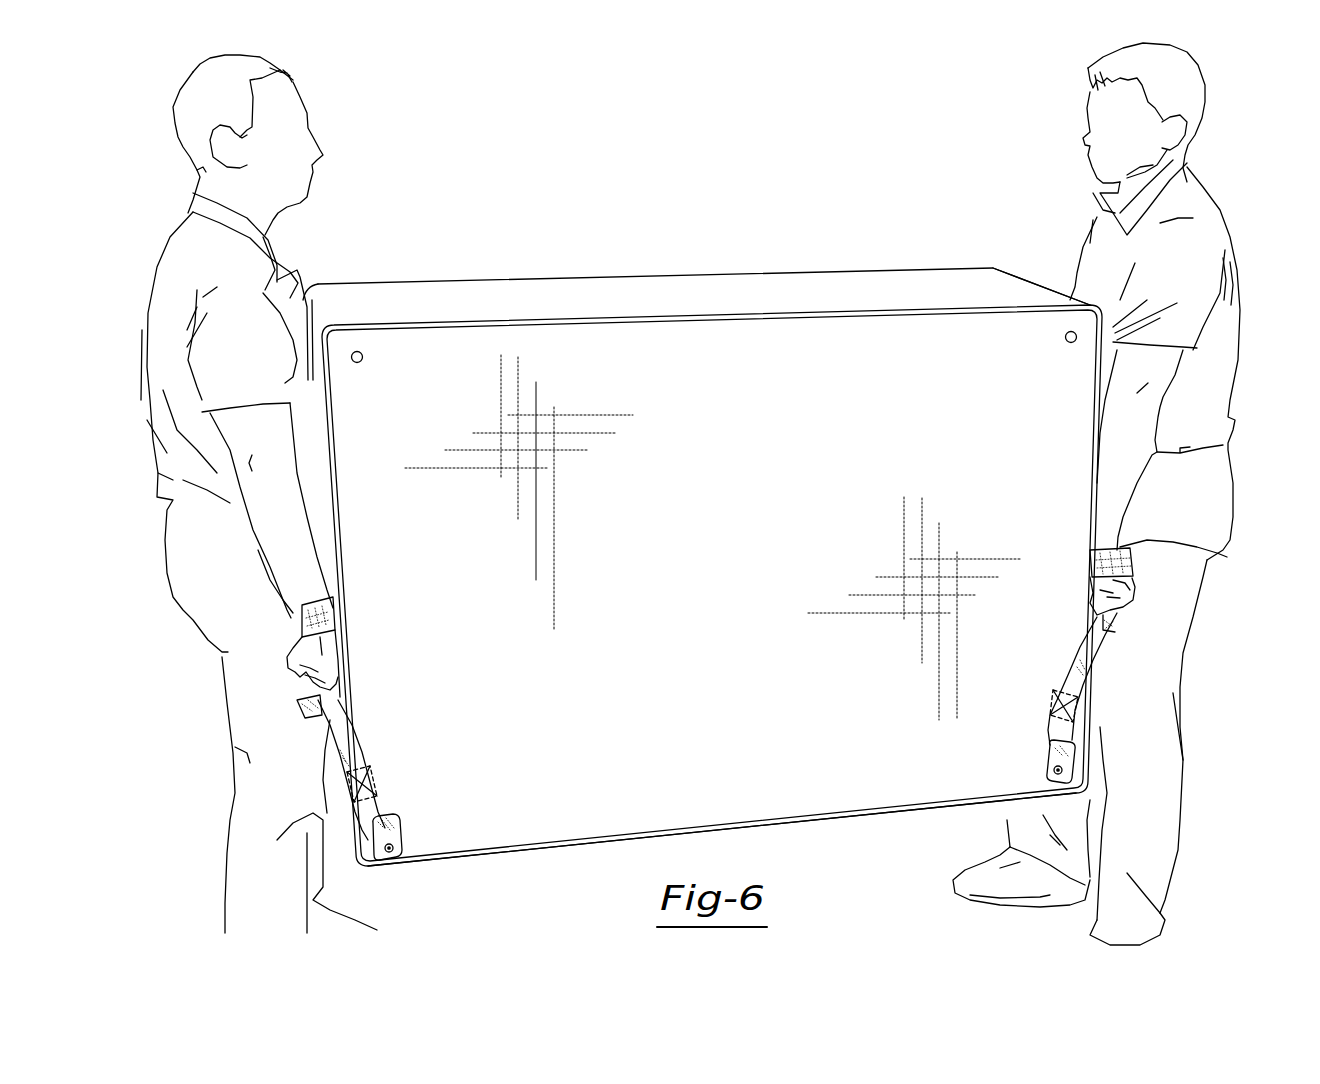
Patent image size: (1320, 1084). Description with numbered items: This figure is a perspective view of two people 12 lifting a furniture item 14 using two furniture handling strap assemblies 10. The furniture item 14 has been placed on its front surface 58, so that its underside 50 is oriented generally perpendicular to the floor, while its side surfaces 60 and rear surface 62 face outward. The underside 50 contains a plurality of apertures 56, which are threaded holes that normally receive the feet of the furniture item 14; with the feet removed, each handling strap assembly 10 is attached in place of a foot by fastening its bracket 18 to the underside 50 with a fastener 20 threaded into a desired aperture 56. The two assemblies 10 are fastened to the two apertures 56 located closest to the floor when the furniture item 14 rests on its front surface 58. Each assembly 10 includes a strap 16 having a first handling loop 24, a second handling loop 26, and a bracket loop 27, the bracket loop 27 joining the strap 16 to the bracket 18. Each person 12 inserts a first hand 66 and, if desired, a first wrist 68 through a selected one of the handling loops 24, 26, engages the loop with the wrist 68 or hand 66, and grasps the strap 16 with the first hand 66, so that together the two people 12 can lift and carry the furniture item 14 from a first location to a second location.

The furniture handling strap assembly 10 is at (316, 710).
The person 12 is at (287, 290).
The furniture item 14 is at (662, 285).
The strap 16 is at (358, 735).
The bracket 18 is at (397, 833).
The fastener 20 is at (394, 849).
The first handling loop 24 is at (330, 717).
The second handling loop 26 is at (335, 610).
The bracket loop 27 is at (375, 805).
The underside 50 is at (742, 563).
The aperture 56 is at (360, 363).
The front surface 58 is at (795, 826).
The side surface 60 is at (1040, 278).
The rear surface 62 is at (820, 288).
The first hand 66 is at (307, 667).
The first wrist 68 is at (293, 618).